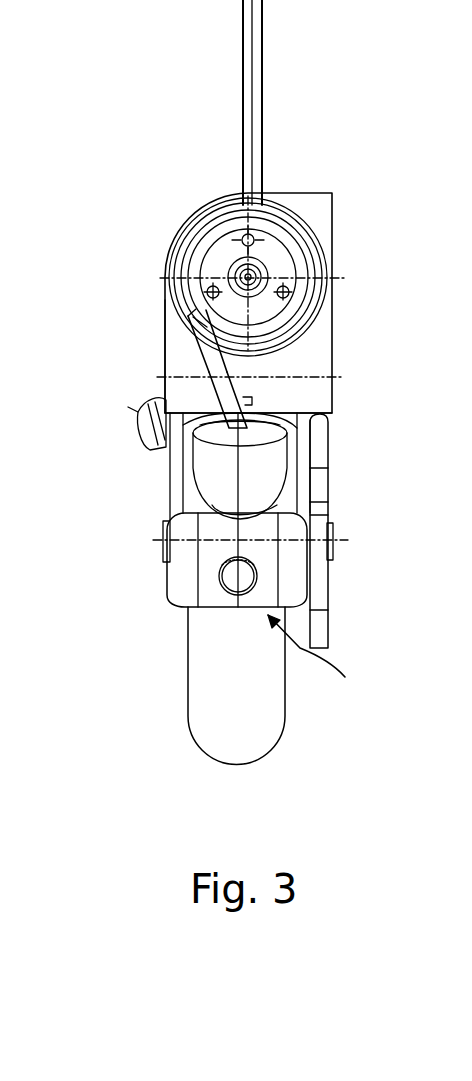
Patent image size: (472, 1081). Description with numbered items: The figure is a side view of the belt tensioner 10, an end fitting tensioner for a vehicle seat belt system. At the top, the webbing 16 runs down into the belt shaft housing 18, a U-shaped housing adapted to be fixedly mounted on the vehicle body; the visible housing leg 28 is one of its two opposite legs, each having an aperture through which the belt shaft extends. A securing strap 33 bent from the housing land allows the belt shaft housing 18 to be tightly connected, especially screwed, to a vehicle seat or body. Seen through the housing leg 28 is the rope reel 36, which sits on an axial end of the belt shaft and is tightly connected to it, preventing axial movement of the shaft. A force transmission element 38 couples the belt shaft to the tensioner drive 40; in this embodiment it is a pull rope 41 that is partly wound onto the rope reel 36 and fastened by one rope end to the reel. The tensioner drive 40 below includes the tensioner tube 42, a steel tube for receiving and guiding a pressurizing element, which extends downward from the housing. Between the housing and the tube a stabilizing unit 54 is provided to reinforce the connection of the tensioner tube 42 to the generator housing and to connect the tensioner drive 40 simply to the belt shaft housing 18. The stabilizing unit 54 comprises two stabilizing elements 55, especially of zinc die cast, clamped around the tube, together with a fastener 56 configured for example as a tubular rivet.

The belt tensioner 10 is at (124, 121).
The webbing 16 is at (262, 93).
The housing leg 28 is at (310, 197).
The belt shaft housing 18 is at (312, 363).
The rope reel 36 is at (285, 260).
The force transmission element 38 is at (200, 363).
The pull rope 41 is at (162, 390).
The tensioner drive 40 is at (135, 638).
The stabilizing element 55 is at (167, 583).
The fastener 56 is at (334, 528).
The securing strap 33 is at (313, 622).
The stabilizing unit 54 is at (323, 658).
The tensioner tube 42 is at (263, 707).